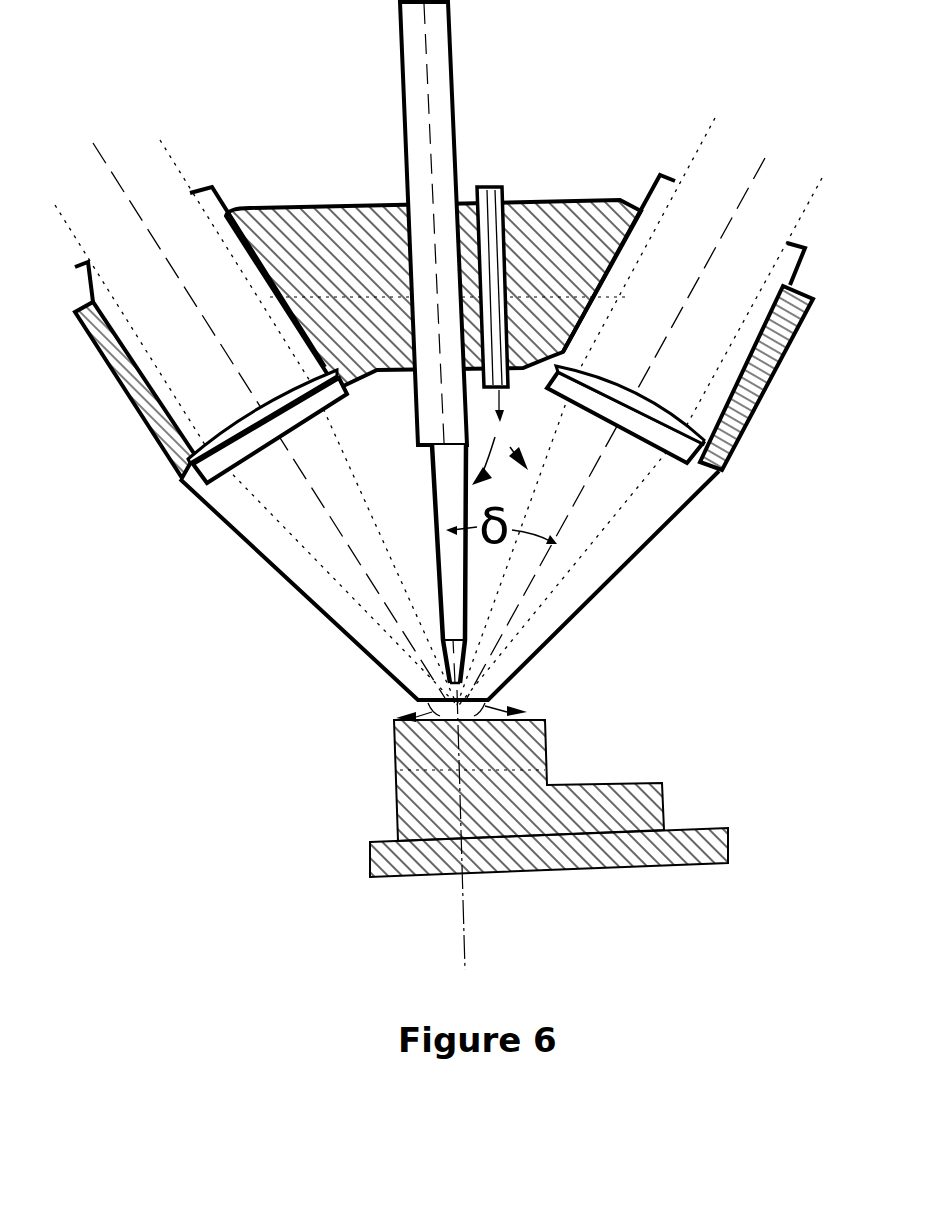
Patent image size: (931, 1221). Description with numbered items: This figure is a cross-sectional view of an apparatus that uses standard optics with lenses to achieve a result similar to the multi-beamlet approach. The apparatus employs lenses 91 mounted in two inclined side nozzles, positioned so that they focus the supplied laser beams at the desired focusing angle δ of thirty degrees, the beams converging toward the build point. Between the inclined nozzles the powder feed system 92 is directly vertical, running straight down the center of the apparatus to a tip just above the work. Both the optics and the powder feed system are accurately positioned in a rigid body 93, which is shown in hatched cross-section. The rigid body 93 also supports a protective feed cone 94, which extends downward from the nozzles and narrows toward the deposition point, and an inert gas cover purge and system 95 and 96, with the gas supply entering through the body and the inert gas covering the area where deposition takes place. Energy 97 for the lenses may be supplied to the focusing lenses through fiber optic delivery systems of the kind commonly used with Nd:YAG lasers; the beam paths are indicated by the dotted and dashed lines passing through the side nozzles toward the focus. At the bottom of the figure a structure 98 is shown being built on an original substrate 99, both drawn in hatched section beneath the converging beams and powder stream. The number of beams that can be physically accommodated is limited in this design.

The lenses 91 is at (225, 410).
The powder feed system 92 is at (420, 127).
The rigid body 93 is at (313, 247).
The protective feed cone 94 is at (290, 585).
The inert gas cover purge and system 95 is at (490, 190).
The inert gas cover purge and system 96 is at (425, 712).
The energy 97 is at (436, 409).
The structure 98 is at (428, 747).
The original substrate 99 is at (372, 856).